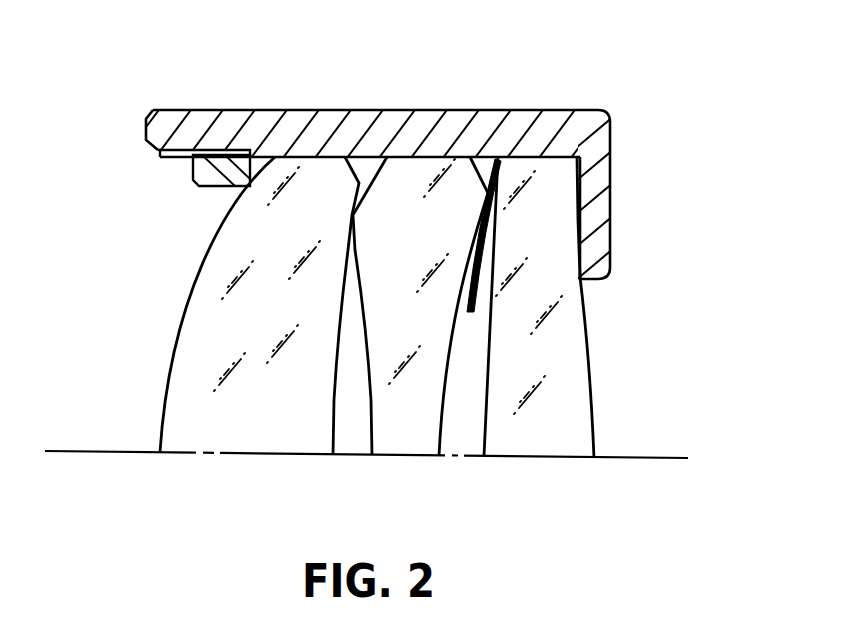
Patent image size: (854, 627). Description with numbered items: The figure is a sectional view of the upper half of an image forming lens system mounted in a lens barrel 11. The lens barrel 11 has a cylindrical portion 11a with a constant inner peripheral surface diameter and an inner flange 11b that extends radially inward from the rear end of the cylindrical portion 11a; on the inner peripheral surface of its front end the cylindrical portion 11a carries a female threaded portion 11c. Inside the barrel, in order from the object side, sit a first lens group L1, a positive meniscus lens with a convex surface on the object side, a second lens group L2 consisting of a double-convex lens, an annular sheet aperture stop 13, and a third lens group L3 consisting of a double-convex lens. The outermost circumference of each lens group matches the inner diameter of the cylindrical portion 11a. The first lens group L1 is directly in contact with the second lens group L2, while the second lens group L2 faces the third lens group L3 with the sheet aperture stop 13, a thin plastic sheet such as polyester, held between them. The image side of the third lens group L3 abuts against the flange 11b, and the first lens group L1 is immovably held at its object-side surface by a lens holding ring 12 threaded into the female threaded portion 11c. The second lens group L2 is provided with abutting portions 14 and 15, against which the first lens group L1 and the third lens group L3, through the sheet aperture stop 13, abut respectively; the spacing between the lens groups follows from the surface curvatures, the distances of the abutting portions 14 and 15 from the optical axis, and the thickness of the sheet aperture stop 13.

The lens barrel 11 is at (388, 180).
The cylindrical portion 11a is at (339, 114).
The inner flange 11b is at (606, 246).
The female threaded portion 11c is at (166, 150).
The lens holding ring 12 is at (204, 182).
The sheet aperture stop 13 is at (470, 292).
The abutting portion 14 is at (358, 215).
The abutting portion 15 is at (488, 195).
The first lens group L1 is at (249, 433).
The second lens group L2 is at (405, 434).
The third lens group L3 is at (542, 434).